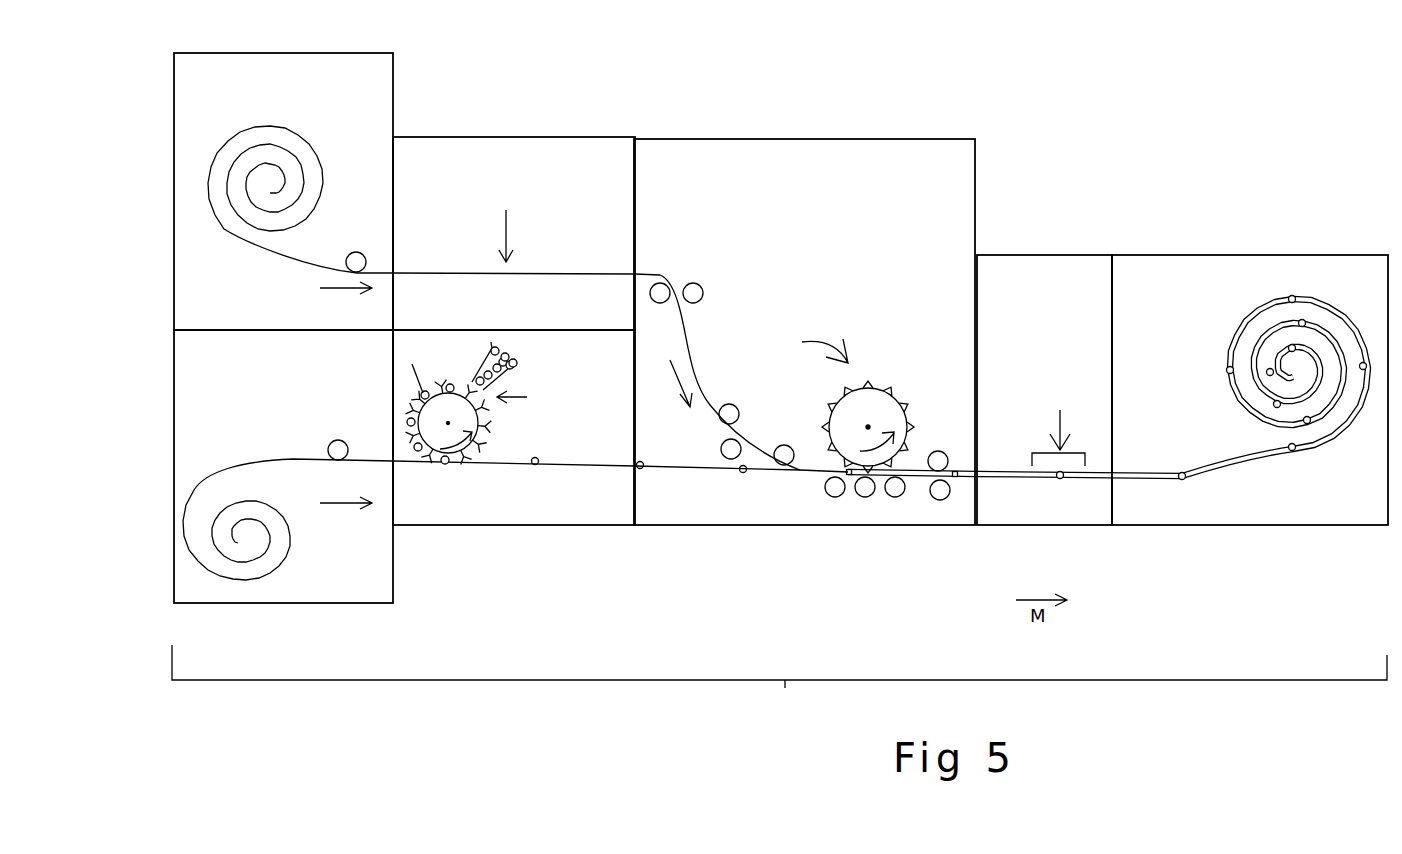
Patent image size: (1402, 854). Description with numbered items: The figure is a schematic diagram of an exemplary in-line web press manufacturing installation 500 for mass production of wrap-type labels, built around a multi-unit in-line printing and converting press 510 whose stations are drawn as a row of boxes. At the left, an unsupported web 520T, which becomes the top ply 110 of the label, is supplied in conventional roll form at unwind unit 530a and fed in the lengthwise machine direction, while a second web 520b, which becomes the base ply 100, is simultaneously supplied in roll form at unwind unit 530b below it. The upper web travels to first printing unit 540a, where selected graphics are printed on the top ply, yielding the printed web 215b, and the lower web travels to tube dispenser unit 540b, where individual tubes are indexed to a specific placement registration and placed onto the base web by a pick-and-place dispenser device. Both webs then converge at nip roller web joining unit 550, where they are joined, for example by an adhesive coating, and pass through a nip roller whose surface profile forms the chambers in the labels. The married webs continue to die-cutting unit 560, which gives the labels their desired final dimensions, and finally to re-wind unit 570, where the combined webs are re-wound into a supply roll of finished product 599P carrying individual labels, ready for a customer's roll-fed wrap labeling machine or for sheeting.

The in-line web press manufacturing installation 500 is at (622, 745).
The multi-unit in-line printing and converting press 510 is at (779, 683).
The unsupported web 520T is at (300, 172).
The top ply 110 is at (300, 185).
The web 520b is at (287, 488).
The base ply 100 is at (250, 467).
The unwind unit 530a is at (283, 171).
The unwind unit 530b is at (283, 488).
The first printing unit 540a is at (526, 216).
The tube dispenser unit 540b is at (427, 525).
The printed web 215b is at (526, 301).
The nip roller web joining unit 550 is at (828, 139).
The die-cutting unit 560 is at (1023, 255).
The final re-wind unit 570 is at (1118, 371).
The finished product 599P is at (1283, 298).